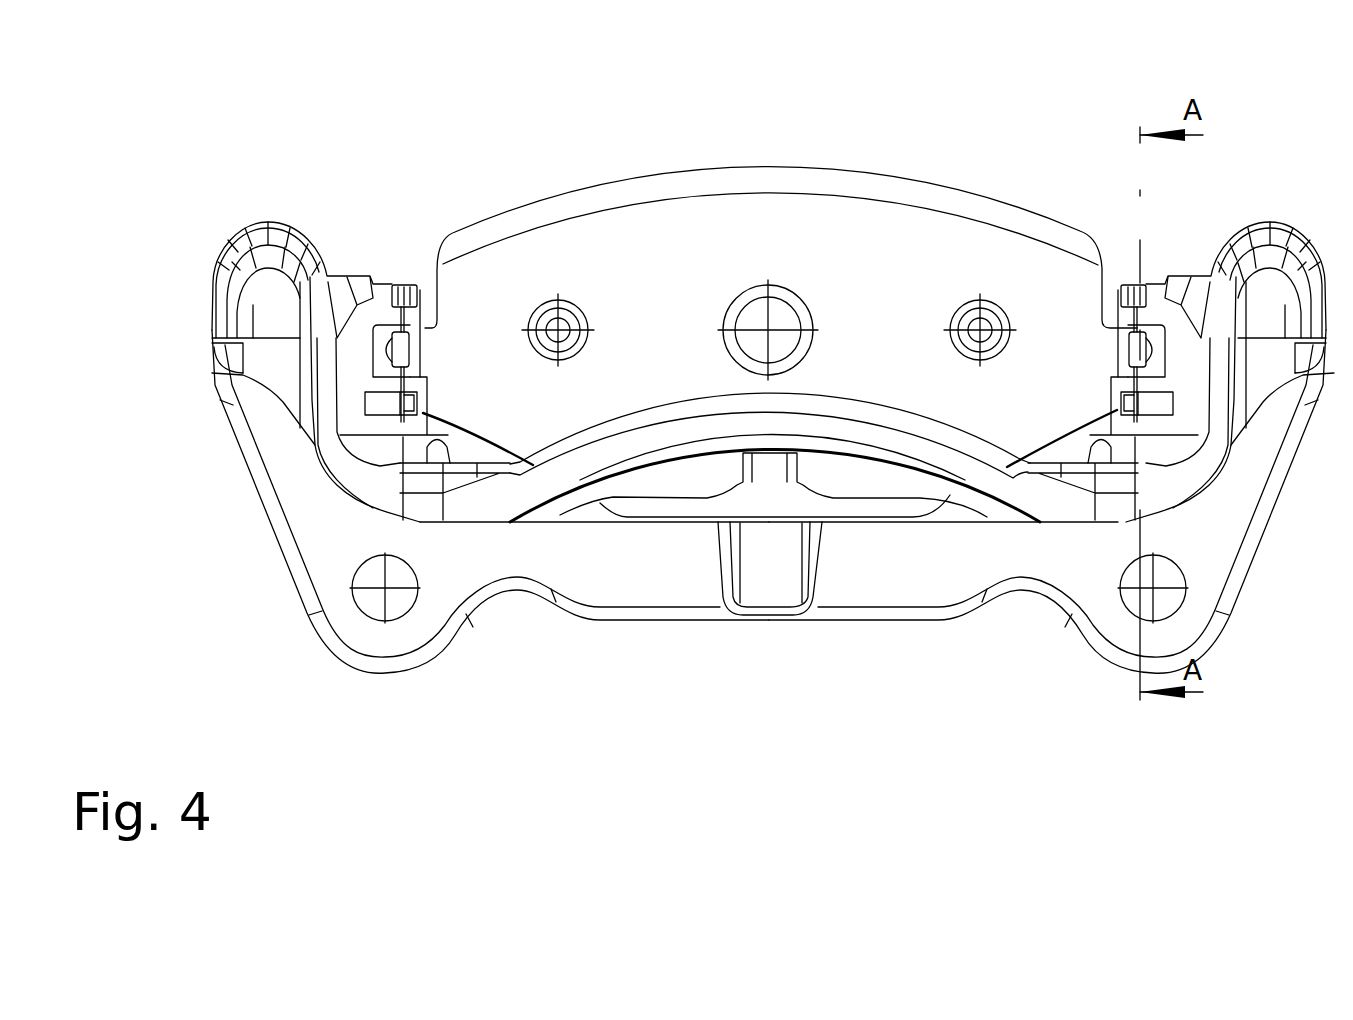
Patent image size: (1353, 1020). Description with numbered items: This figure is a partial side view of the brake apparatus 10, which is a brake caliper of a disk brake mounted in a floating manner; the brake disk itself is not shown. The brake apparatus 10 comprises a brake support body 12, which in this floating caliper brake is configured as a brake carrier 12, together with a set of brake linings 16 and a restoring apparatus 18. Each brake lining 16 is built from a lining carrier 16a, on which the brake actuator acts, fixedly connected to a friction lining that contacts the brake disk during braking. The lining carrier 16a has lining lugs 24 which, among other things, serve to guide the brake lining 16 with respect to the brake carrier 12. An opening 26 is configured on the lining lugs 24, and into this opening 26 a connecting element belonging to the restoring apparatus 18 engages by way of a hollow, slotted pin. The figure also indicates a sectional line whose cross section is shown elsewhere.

The brake apparatus 10 is at (472, 122).
The brake support body 12 is at (907, 553).
The brake lining 16 is at (865, 232).
The lining carrier 16a is at (980, 250).
The restoring apparatus 18 is at (400, 258).
The lining lugs 24 is at (425, 325).
The opening 26 is at (413, 350).